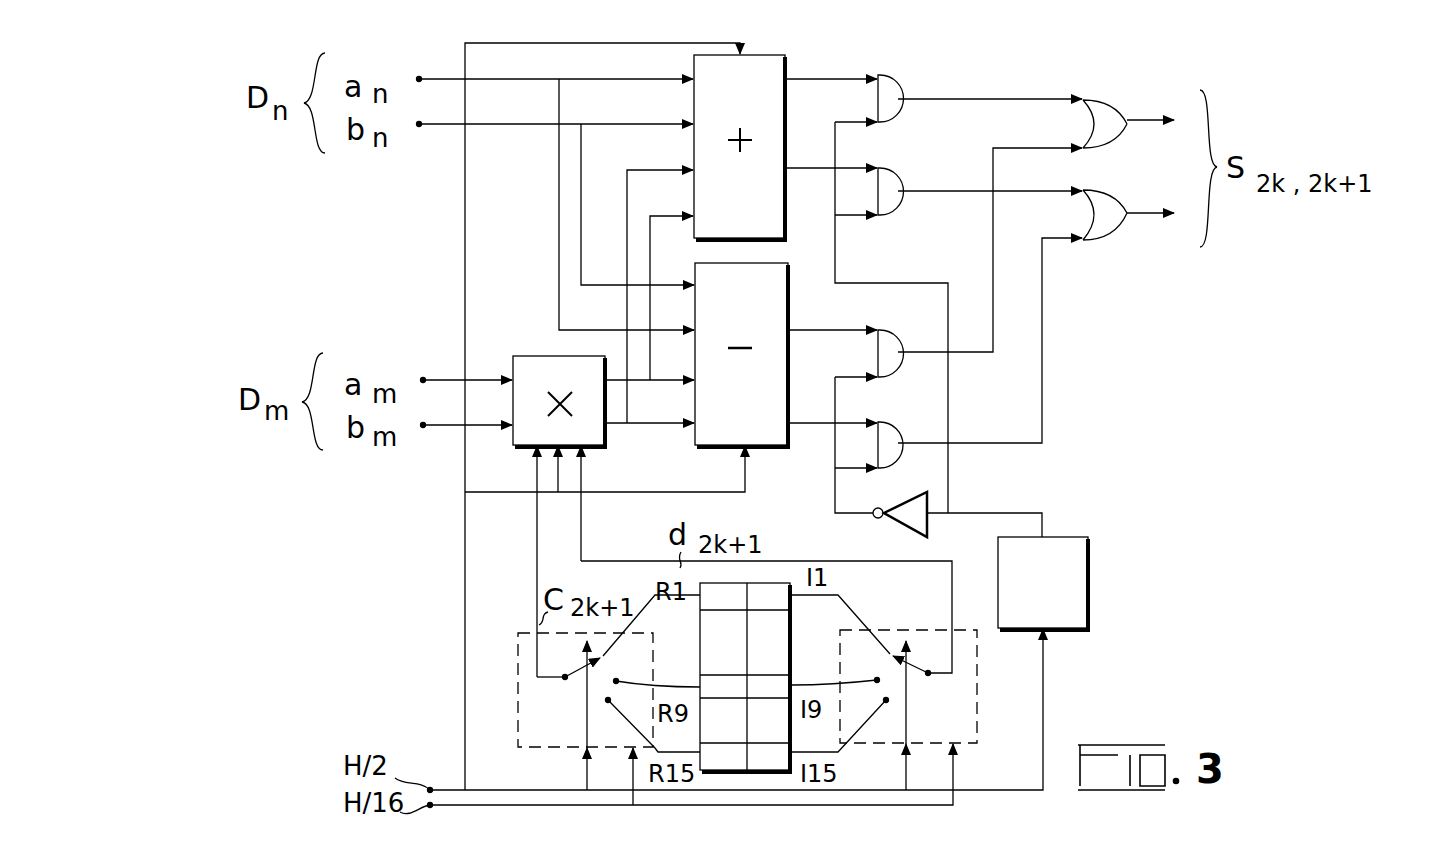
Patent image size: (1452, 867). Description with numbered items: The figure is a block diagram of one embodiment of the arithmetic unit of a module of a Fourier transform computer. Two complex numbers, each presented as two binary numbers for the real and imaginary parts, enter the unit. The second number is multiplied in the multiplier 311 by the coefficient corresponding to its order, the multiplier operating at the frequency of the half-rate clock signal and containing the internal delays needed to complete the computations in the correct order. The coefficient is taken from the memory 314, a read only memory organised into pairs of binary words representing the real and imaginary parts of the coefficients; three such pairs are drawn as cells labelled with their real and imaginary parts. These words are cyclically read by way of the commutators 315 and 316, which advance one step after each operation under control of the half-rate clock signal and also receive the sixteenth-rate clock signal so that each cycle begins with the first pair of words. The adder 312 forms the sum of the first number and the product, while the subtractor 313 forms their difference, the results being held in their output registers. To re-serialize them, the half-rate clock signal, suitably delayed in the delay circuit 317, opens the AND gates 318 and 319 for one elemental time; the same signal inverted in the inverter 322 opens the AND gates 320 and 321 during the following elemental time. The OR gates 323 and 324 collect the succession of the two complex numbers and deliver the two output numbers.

The multiplier 311 is at (605, 447).
The adder 312 is at (787, 122).
The subtractor 313 is at (789, 380).
The memory 314 is at (791, 665).
The commutator 315 is at (977, 720).
The commutator 316 is at (519, 731).
The delay circuit 317 is at (1088, 582).
The AND gate 318 is at (893, 121).
The AND gate 319 is at (893, 214).
The AND gate 320 is at (893, 376).
The AND gate 321 is at (893, 467).
The inverter 322 is at (927, 525).
The OR gate 323 is at (1113, 108).
The OR gate 324 is at (1105, 240).